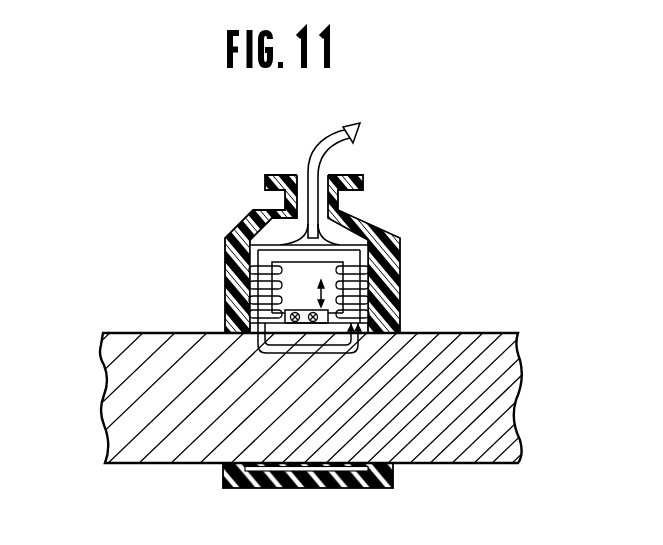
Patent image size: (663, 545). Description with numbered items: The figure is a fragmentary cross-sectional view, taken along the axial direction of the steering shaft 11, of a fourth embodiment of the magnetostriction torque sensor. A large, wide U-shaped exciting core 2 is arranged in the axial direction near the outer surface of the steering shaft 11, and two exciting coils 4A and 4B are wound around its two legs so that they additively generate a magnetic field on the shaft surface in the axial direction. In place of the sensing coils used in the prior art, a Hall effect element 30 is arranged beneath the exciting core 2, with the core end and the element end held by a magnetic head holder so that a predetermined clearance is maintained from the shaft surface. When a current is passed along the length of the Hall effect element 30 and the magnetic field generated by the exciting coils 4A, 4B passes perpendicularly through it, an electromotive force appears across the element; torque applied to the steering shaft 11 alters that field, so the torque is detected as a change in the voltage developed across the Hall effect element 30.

The exciting core 2 is at (309, 228).
The exciting coil 4A is at (400, 264).
The exciting coil 4B is at (247, 270).
The steering shaft 11 is at (488, 342).
The Hall effect element 30 is at (267, 353).